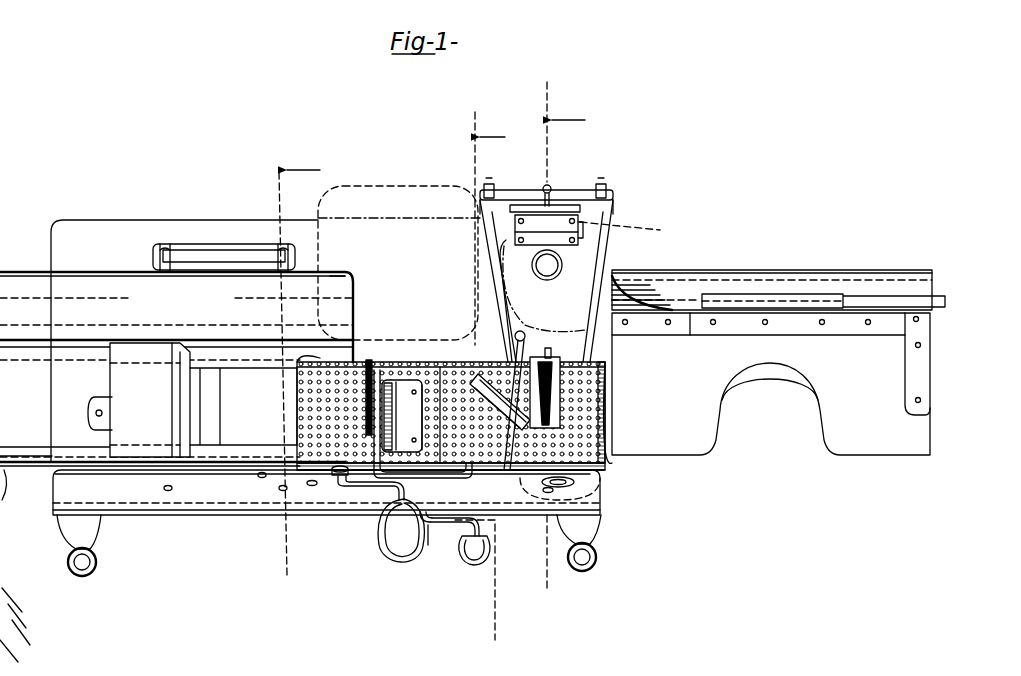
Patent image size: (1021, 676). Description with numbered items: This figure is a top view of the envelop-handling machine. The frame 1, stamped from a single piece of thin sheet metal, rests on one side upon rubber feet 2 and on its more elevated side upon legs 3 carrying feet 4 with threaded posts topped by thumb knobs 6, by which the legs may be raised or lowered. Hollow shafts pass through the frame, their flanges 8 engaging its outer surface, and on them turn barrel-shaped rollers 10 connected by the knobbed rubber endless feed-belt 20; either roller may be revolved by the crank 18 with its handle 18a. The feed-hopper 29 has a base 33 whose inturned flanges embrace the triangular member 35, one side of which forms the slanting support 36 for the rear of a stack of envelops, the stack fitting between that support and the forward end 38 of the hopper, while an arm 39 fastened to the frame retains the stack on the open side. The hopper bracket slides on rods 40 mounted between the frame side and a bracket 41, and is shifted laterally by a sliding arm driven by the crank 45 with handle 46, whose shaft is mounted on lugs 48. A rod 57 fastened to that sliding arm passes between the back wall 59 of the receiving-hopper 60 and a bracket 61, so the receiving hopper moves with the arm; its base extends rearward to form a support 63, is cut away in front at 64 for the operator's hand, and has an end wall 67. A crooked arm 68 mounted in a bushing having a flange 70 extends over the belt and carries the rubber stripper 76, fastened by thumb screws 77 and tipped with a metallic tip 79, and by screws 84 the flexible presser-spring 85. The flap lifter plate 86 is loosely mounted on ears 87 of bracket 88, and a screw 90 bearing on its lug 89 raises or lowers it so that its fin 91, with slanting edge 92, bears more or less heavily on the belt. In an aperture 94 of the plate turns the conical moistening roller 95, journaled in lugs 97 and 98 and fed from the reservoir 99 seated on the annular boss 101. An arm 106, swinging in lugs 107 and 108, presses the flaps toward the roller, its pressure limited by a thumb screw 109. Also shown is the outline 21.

The frame 1 is at (136, 228).
The rubber feet 2 is at (297, 371).
The legs 3 is at (92, 541).
The feet 4 is at (99, 574).
The thumb knobs 6 is at (81, 570).
The flanges 8 is at (316, 488).
The rollers 10 is at (305, 360).
The crank 18 is at (368, 488).
The handle 18a is at (392, 560).
The endless feed-belt 20 is at (322, 364).
The enclosure 21 is at (418, 188).
The feed-hopper 29 is at (172, 268).
The base of the feed-hopper 33 is at (33, 462).
The triangular member 35 is at (90, 395).
The slanting support 36 is at (203, 400).
The forward end of the feed-hopper 38 is at (348, 276).
The arm 39 is at (332, 476).
The rods 40 is at (168, 248).
The bracket 41 is at (216, 248).
The crank 45 is at (452, 524).
The handle 46 is at (472, 564).
The lugs 48 is at (428, 530).
The rod 57 is at (656, 300).
The back wall 59 is at (690, 336).
The receiving-hopper 60 is at (771, 384).
The bracket 61 is at (720, 294).
The support 63 is at (880, 270).
The cut away portion 64 is at (770, 404).
The end wall 67 is at (930, 366).
The crooked arm 68 is at (420, 480).
The flange 70 is at (478, 474).
The rubber stripper 76 is at (402, 416).
The thumb screws 77 is at (388, 380).
The metallic tip 79 is at (425, 392).
The screws 84 is at (369, 362).
The presser-spring 85 is at (404, 382).
The plate 86 is at (546, 281).
The ears 87 is at (489, 184).
The bracket 88 is at (570, 194).
The lug 89 is at (520, 205).
The screw 90 is at (548, 186).
The fin 91 is at (500, 402).
The edge of the fin 92 is at (452, 392).
The aperture 94 is at (562, 362).
The moistening roller 95 is at (540, 360).
The lug 97 is at (550, 356).
The lug 98 is at (570, 480).
The reservoir 99 is at (630, 222).
The annular boss 101 is at (560, 268).
The arm 106 is at (512, 278).
The lug 107 is at (581, 215).
The lug 108 is at (515, 222).
The thumb screw 109 is at (512, 337).